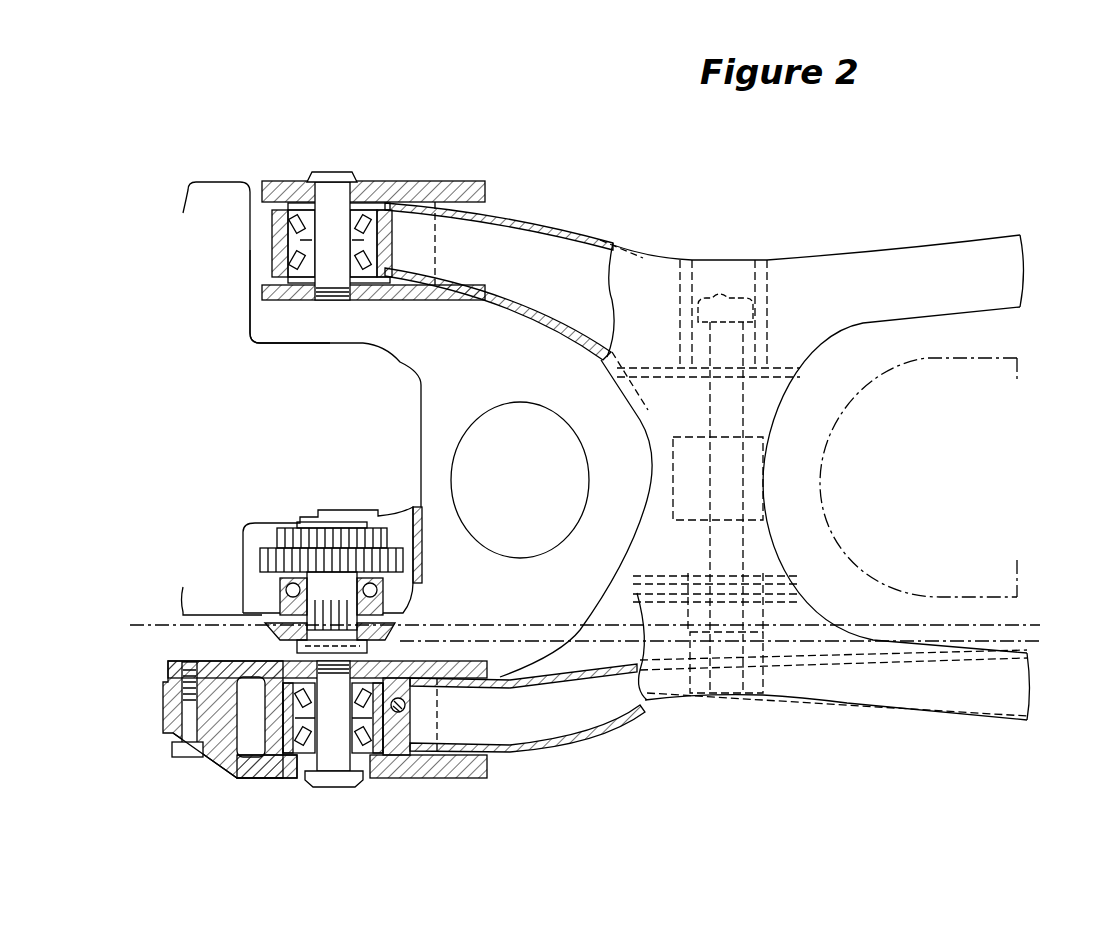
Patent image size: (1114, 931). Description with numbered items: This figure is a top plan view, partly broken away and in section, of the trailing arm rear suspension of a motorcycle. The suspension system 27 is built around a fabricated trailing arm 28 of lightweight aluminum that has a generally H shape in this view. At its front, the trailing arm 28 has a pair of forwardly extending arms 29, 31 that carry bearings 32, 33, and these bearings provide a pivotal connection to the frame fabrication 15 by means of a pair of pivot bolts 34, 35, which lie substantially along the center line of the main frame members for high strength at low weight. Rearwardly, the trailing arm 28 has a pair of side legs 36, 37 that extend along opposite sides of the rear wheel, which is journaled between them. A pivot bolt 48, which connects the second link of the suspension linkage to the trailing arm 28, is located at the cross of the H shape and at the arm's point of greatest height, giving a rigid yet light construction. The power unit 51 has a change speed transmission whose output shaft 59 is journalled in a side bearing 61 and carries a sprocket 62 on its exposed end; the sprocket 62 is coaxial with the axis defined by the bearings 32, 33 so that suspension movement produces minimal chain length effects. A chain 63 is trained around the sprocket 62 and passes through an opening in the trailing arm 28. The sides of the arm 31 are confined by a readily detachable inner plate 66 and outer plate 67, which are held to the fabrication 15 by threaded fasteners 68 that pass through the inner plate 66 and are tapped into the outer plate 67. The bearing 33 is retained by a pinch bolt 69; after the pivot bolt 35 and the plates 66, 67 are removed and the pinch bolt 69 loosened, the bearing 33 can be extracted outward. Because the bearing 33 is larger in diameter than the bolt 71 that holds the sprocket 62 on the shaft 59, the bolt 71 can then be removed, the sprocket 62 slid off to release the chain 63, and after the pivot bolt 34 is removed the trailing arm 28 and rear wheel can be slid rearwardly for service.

The fabrication 15 is at (283, 180).
The suspension system 27 is at (592, 783).
The trailing arm 28 is at (847, 710).
The forwardly extending arm 29 is at (423, 188).
The forwardly extending arm 31 is at (413, 758).
The bearing 32 is at (280, 265).
The bearing 33 is at (295, 752).
The pivot bolt 34 is at (328, 173).
The pivot bolt 35 is at (320, 787).
The rearwardly extending side leg 36 is at (947, 240).
The rearwardly extending side leg 37 is at (975, 723).
The pivot bolt 48 is at (760, 410).
The power unit 51 is at (292, 340).
The output shaft 59 is at (315, 545).
The side bearing 61 is at (253, 592).
The sprocket 62 is at (260, 630).
The chain 63 is at (460, 623).
The inner plate 66 is at (163, 670).
The outer plate 67 is at (163, 737).
The threaded fastener 68 is at (187, 770).
The pinch bolt 69 is at (415, 700).
The bolt 71 is at (260, 647).